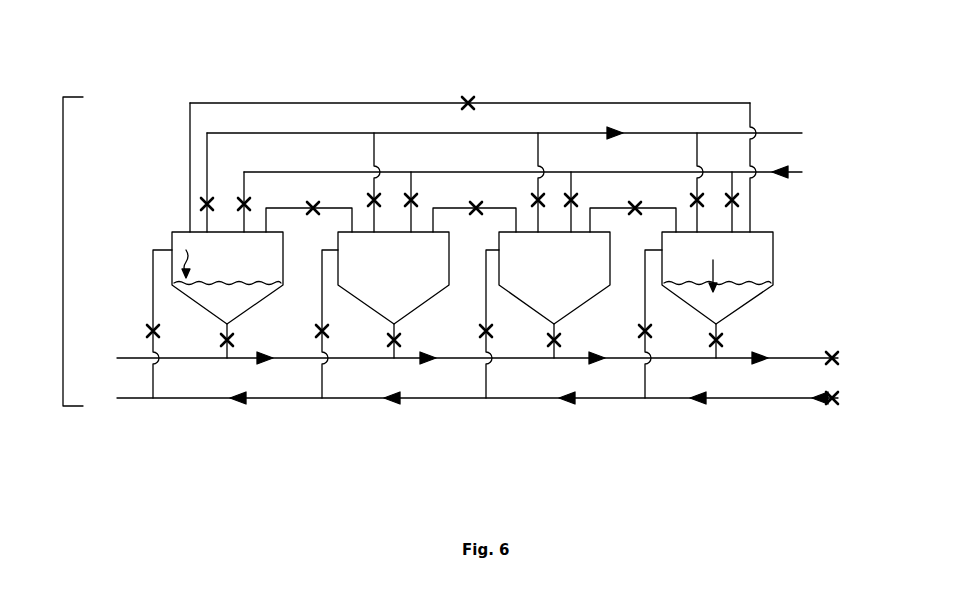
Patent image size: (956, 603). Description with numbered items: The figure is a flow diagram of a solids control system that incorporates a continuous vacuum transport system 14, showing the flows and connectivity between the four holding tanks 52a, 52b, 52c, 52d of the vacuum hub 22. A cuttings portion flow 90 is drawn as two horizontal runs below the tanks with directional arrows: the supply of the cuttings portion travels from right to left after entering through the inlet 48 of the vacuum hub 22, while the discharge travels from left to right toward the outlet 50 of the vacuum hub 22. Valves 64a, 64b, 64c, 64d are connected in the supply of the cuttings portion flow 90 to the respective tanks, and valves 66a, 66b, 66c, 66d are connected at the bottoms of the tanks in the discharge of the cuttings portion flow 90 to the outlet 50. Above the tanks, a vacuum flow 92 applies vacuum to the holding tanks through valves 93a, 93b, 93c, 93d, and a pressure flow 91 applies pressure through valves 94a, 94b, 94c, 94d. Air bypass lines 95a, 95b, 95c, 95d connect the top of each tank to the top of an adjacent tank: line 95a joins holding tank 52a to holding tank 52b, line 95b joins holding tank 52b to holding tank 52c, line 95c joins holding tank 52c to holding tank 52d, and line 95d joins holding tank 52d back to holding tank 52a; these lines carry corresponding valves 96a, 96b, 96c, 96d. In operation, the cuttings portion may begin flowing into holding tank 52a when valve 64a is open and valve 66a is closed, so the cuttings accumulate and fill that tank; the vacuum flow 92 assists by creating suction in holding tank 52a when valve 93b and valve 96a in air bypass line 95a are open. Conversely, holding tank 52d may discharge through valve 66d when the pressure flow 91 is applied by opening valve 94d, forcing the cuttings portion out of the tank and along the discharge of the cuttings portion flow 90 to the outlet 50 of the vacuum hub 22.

The continuous vacuum transport system 14 is at (216, 55).
The vacuum hub 22 is at (63, 141).
The inlet 48 is at (831, 406).
The outlet 50 is at (833, 351).
The holding tank 52a is at (283, 266).
The holding tank 52b is at (449, 266).
The holding tank 52c is at (610, 266).
The holding tank 52d is at (773, 266).
The valve 64a is at (150, 330).
The valve 64b is at (320, 328).
The valve 64c is at (484, 328).
The valve 64d is at (642, 328).
The valve 66a is at (222, 337).
The valve 66b is at (390, 339).
The valve 66c is at (549, 339).
The valve 66d is at (712, 339).
The cuttings portion flow 90 is at (785, 357).
The pressure flow 91 is at (792, 178).
The vacuum flow 92 is at (764, 133).
The valve 93a is at (209, 200).
The valve 93b is at (377, 197).
The valve 93c is at (541, 197).
The valve 93d is at (700, 197).
The valve 94a is at (246, 201).
The valve 94b is at (413, 197).
The valve 94c is at (574, 197).
The valve 94d is at (735, 197).
The air bypass line 95a is at (269, 208).
The air bypass line 95b is at (436, 208).
The air bypass line 95c is at (598, 208).
The air bypass line 95d is at (654, 101).
The valve 96a is at (315, 206).
The valve 96b is at (478, 206).
The valve 96c is at (637, 206).
The valve 96d is at (471, 100).